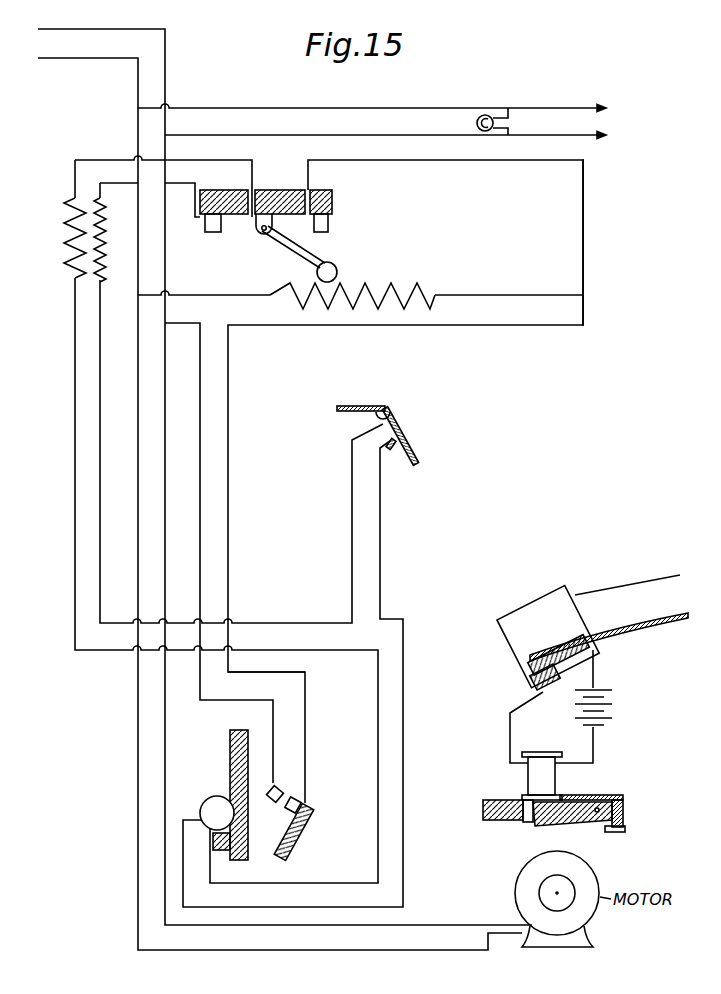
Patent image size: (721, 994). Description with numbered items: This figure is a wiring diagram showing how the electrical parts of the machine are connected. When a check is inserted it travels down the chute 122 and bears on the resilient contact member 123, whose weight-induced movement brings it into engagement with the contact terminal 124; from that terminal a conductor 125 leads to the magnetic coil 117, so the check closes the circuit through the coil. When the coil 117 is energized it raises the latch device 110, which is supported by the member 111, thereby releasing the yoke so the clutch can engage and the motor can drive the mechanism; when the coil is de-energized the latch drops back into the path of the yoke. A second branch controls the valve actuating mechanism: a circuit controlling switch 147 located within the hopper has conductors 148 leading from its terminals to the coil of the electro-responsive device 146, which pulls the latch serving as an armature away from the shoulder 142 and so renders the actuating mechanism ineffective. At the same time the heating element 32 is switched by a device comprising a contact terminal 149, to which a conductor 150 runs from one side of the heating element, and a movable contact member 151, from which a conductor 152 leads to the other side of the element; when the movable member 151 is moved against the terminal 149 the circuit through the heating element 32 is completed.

The heating element 32 is at (398, 292).
The latch device 110 is at (627, 808).
The member 111 is at (497, 800).
The magnetic coil 117 is at (548, 779).
The chute 122 is at (628, 608).
The resilient contact member 123 is at (570, 640).
The contact terminal 124 is at (530, 668).
The conductor 125 is at (598, 675).
The shoulder 142 is at (248, 860).
The electro-responsive device 146 is at (200, 813).
The circuit controlling switch 147 is at (415, 457).
The conductors 148 is at (100, 308).
The contact terminal 149 is at (283, 789).
The conductor 150 is at (241, 295).
The movable contact member 151 is at (315, 822).
The conductor 152 is at (305, 684).